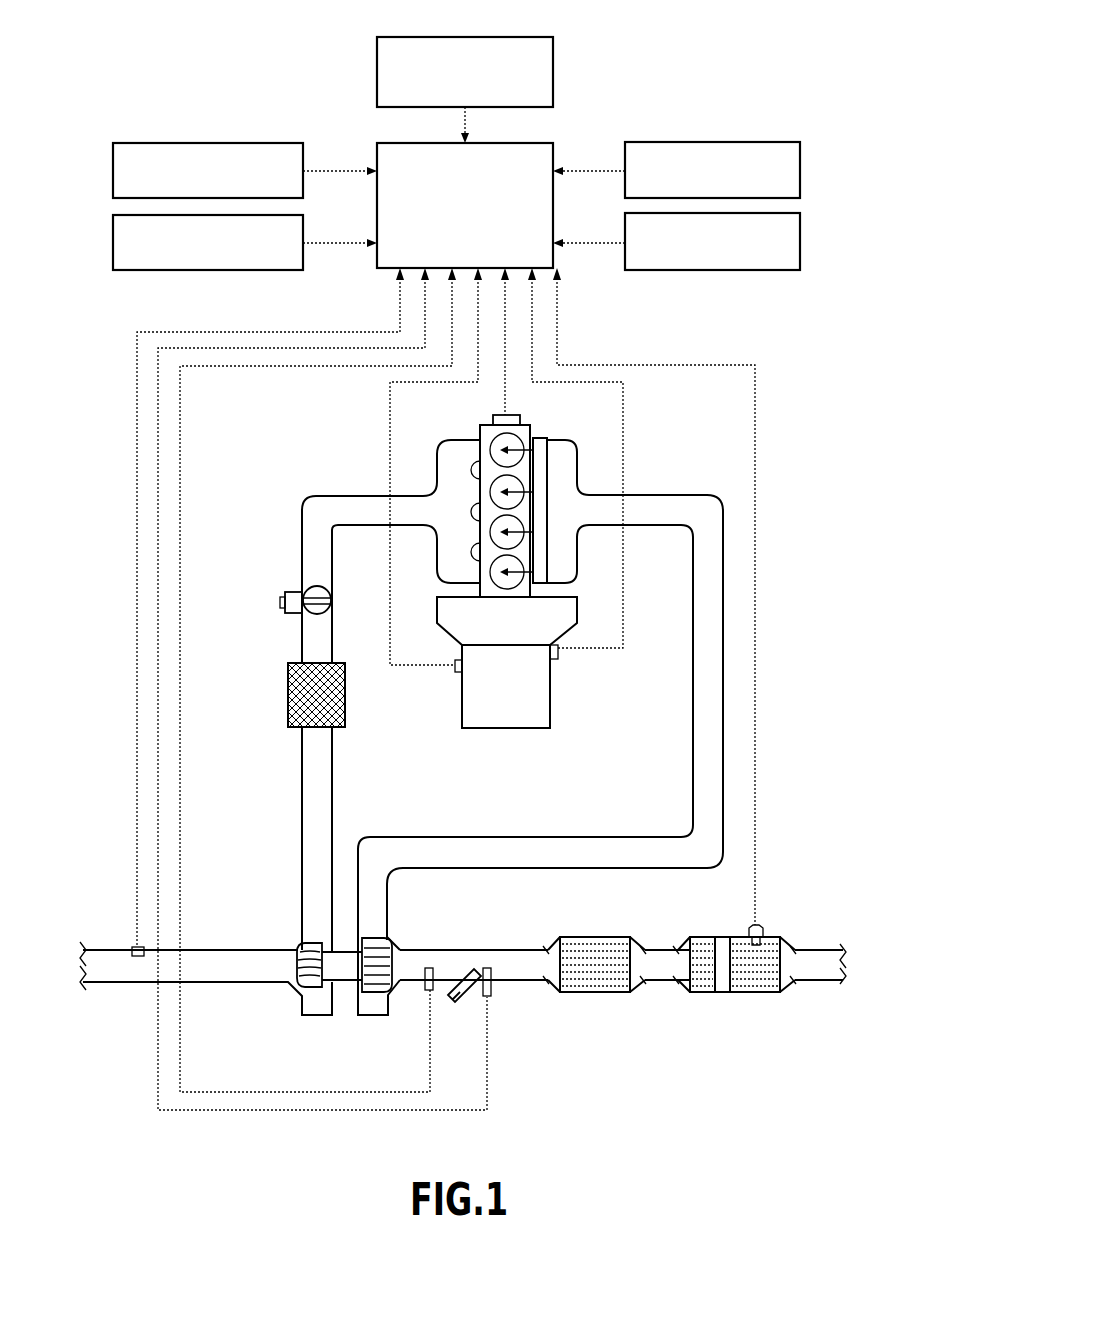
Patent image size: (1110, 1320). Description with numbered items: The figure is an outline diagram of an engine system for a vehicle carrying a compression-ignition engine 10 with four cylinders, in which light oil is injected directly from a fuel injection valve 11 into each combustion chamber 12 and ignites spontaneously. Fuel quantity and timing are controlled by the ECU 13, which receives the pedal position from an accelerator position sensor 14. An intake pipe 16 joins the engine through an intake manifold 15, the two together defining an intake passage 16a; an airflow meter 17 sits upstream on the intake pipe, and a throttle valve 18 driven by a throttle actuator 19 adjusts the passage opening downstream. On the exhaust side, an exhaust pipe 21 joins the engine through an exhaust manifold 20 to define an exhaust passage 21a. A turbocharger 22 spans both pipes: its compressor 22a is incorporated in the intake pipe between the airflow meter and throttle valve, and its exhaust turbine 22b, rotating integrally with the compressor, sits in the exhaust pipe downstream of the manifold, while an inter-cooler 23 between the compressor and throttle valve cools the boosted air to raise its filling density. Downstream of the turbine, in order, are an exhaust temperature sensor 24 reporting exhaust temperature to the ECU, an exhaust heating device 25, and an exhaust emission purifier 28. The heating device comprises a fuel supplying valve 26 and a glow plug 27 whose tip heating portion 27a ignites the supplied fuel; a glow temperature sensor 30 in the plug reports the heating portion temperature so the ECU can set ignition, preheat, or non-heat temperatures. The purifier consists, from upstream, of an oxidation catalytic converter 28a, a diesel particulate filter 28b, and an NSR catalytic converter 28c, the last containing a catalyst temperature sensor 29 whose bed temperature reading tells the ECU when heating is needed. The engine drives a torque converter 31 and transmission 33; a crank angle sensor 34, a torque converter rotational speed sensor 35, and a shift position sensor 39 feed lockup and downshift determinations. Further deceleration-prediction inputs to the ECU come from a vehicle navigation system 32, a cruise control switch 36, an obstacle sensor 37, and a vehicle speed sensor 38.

The engine 10 is at (480, 440).
The fuel injection valve 11 is at (472, 548).
The combustion chamber 12 is at (545, 566).
The ECU 13 is at (553, 143).
The accelerator position sensor 14 is at (303, 152).
The intake manifold 15 is at (452, 462).
The intake pipe 16 is at (222, 950).
The intake passage 16a is at (330, 780).
The airflow meter 17 is at (134, 946).
The throttle valve 18 is at (330, 598).
The throttle actuator 19 is at (292, 592).
The exhaust manifold 20 is at (580, 458).
The exhaust pipe 21 is at (712, 735).
The exhaust passage 21a is at (580, 862).
The turbocharger 22 is at (334, 990).
The compressor 22a is at (302, 944).
The exhaust turbine 22b is at (378, 996).
The inter-cooler 23 is at (345, 704).
The exhaust temperature sensor 24 is at (426, 952).
The exhaust heating device 25 is at (480, 940).
The fuel supplying valve 26 is at (436, 996).
The glow plug 27 is at (502, 1000).
The heating portion 27a is at (487, 966).
The exhaust emission purifier 28 is at (676, 1030).
The oxidation catalytic converter 28a is at (596, 992).
The diesel particulate filter 28b is at (704, 992).
The NSR catalytic converter 28c is at (760, 992).
The catalyst temperature sensor 29 is at (764, 930).
The glow temperature sensor 30 is at (502, 982).
The torque converter 31 is at (520, 620).
The vehicle navigation system 32 is at (553, 68).
The transmission 33 is at (540, 716).
The crank angle sensor 34 is at (520, 418).
The torque converter rotational speed sensor 35 is at (558, 655).
The cruise control switch 36 is at (800, 152).
The obstacle sensor 37 is at (303, 222).
The vehicle speed sensor 38 is at (800, 222).
The shift position sensor 39 is at (455, 668).